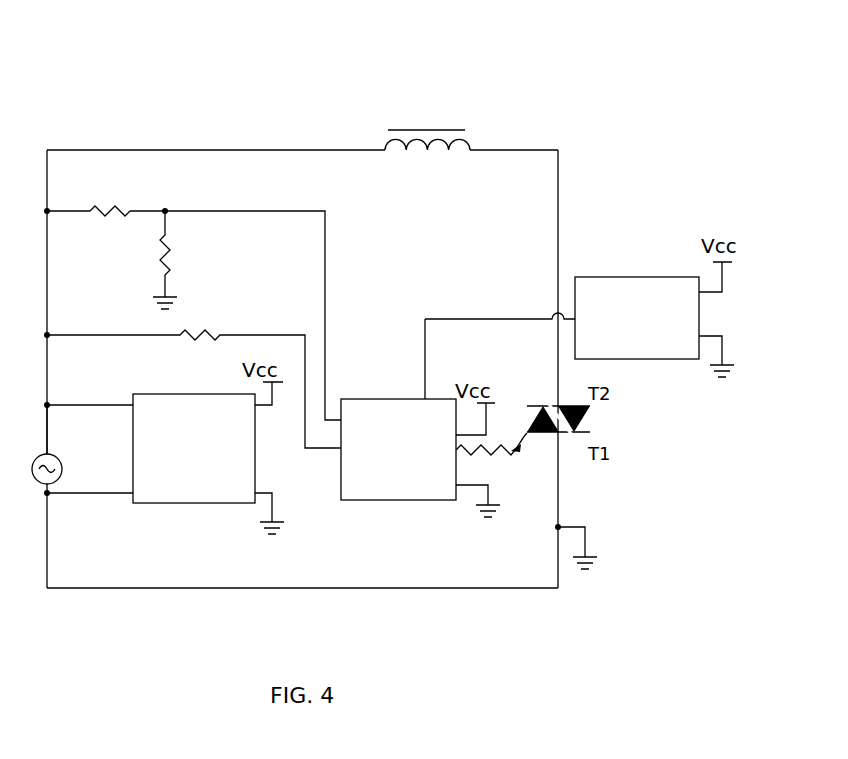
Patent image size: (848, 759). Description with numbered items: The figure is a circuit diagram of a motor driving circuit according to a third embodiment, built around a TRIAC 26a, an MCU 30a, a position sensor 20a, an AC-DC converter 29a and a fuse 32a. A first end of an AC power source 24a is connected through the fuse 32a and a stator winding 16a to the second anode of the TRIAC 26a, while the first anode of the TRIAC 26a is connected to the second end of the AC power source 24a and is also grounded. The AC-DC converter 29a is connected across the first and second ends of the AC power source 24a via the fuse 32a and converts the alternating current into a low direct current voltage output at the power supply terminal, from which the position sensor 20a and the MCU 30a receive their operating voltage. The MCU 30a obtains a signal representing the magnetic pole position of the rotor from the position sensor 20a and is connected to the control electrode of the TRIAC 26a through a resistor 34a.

The stator winding 16a is at (388, 142).
The position sensor 20a is at (657, 277).
The AC power source 24a is at (60, 454).
The TRIAC 26a is at (585, 414).
The AC-DC converter 29a is at (176, 394).
The MCU 30a is at (399, 500).
The fuse 32a is at (47, 437).
The resistor 34a is at (515, 455).